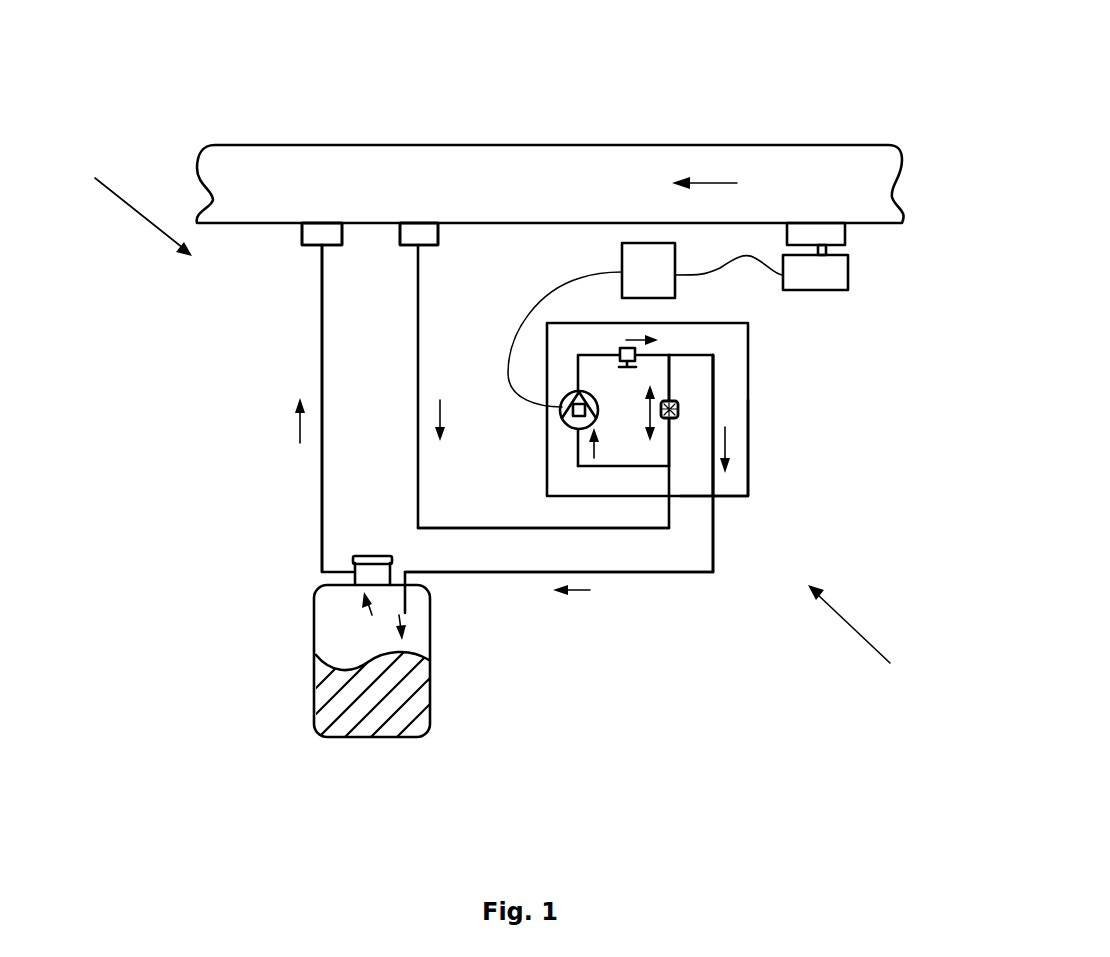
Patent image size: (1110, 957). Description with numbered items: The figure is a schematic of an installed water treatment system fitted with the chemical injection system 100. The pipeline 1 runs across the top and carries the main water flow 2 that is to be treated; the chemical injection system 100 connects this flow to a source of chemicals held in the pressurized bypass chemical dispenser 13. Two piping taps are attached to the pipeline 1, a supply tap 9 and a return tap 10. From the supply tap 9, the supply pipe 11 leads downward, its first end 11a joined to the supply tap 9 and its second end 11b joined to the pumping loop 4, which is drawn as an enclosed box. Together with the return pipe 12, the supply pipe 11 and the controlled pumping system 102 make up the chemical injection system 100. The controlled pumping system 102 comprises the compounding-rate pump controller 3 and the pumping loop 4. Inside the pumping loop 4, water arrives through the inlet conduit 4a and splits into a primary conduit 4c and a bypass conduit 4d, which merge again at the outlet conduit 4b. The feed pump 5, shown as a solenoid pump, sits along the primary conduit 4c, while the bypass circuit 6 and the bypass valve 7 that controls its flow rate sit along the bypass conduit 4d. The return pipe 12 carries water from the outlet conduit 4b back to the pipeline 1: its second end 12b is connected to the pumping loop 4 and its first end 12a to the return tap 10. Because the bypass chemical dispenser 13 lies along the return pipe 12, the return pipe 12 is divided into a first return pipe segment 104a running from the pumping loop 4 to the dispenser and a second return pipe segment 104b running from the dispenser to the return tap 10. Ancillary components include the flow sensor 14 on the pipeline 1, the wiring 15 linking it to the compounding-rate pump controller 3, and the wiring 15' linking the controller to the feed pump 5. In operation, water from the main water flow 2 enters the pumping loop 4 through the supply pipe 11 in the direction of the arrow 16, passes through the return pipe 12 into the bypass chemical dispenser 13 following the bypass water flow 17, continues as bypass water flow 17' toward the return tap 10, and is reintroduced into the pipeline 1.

The pipeline 1 is at (355, 145).
The main water flow 2 is at (714, 183).
The compounding-rate pump controller 3 is at (650, 258).
The pumping loop 4 is at (753, 396).
The inlet conduit 4a is at (713, 490).
The outlet conduit 4b is at (740, 495).
The primary conduit 4c is at (589, 358).
The bypass conduit 4d is at (671, 366).
The feed pump 5 is at (567, 413).
The bypass circuit 6 is at (788, 404).
The bypass valve 7 is at (680, 410).
The supply tap 9 is at (438, 246).
The return tap 10 is at (303, 241).
The supply pipe 11 is at (422, 362).
The first end of the supply pipe 11a is at (428, 224).
The second end of the supply pipe 11b is at (668, 503).
The return pipe 12 is at (322, 335).
The first end of the return pipe 12a is at (320, 250).
The second end of the return pipe 12b is at (670, 480).
The bypass chemical dispenser 13 is at (314, 622).
The flow sensor 14 is at (850, 275).
The wiring 15 is at (772, 166).
The wiring 15' is at (535, 222).
The arrow 16 is at (445, 447).
The bypass water flow 17 is at (714, 594).
The bypass water flow 17' is at (222, 461).
The chemical injection system 100 is at (122, 202).
The controlled pumping system 102 is at (874, 635).
The first return pipe segment 104a is at (480, 578).
The second return pipe segment 104b is at (320, 512).